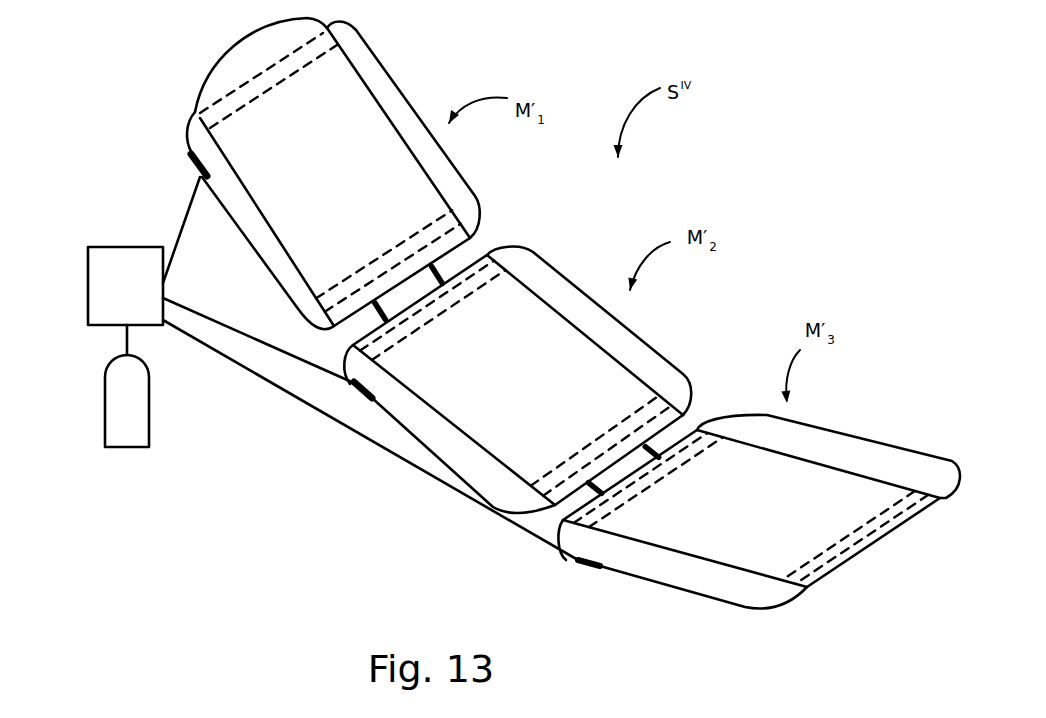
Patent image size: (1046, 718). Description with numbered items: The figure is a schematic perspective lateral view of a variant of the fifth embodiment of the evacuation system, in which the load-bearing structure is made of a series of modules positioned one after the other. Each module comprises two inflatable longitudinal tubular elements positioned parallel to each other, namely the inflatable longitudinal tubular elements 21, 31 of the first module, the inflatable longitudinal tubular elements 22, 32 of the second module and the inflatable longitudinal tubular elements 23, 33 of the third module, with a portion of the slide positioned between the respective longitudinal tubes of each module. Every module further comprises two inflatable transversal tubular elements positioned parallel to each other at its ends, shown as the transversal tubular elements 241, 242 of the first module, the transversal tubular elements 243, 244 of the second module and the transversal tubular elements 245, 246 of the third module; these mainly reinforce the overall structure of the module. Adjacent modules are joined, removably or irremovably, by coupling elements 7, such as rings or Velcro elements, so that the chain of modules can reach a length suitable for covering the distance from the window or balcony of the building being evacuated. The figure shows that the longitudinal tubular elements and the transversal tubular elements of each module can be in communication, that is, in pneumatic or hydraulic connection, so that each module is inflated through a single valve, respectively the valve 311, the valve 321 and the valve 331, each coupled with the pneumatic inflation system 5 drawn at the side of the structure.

The pneumatic inflation system 5 is at (70, 212).
The coupling elements 7 is at (440, 278).
The inflatable longitudinal tubular element 21 is at (403, 90).
The inflatable longitudinal tubular element 22 is at (637, 327).
The inflatable longitudinal tubular element 23 is at (855, 432).
The inflatable longitudinal tubular element 31 is at (228, 216).
The inflatable longitudinal tubular element 32 is at (460, 472).
The inflatable longitudinal tubular element 33 is at (722, 588).
The valve 311 is at (190, 160).
The valve 321 is at (357, 395).
The valve 331 is at (590, 568).
The inflatable transversal tubular element 241 is at (257, 100).
The inflatable transversal tubular element 242 is at (362, 272).
The inflatable transversal tubular element 243 is at (460, 305).
The inflatable transversal tubular element 244 is at (590, 437).
The inflatable transversal tubular element 245 is at (682, 478).
The inflatable transversal tubular element 246 is at (813, 552).